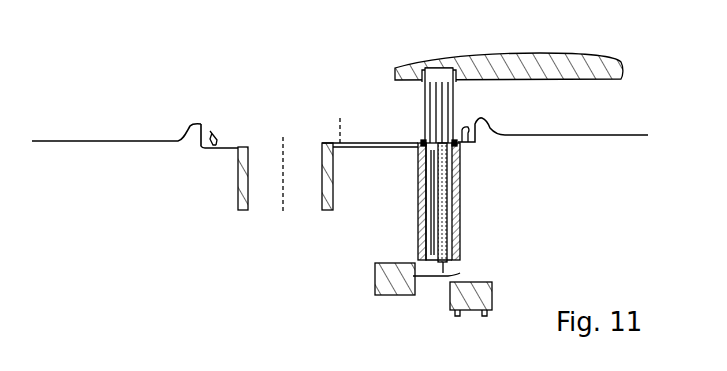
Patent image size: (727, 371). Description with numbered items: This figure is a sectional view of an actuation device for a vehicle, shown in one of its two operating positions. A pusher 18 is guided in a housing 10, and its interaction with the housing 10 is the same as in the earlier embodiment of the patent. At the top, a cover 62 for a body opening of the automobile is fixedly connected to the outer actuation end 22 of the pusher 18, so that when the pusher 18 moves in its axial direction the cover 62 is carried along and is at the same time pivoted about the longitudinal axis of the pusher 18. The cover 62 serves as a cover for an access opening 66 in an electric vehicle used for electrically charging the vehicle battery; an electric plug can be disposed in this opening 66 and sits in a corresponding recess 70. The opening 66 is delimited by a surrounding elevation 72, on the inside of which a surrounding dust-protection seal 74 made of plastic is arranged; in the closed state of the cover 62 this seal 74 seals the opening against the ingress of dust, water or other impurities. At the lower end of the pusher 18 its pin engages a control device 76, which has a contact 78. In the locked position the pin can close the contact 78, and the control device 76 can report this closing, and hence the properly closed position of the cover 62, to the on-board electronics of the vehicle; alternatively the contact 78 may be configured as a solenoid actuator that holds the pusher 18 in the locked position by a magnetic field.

The housing 10 is at (459, 226).
The pusher 18 is at (455, 108).
The outer actuation end 22 is at (447, 70).
The cover 62 is at (545, 63).
The access opening 66 is at (179, 142).
The recess 70 is at (248, 190).
The surrounding elevation 72 is at (188, 126).
The dust-protection seal 74 is at (219, 130).
The control device 76 is at (392, 286).
The contact 78 is at (440, 270).